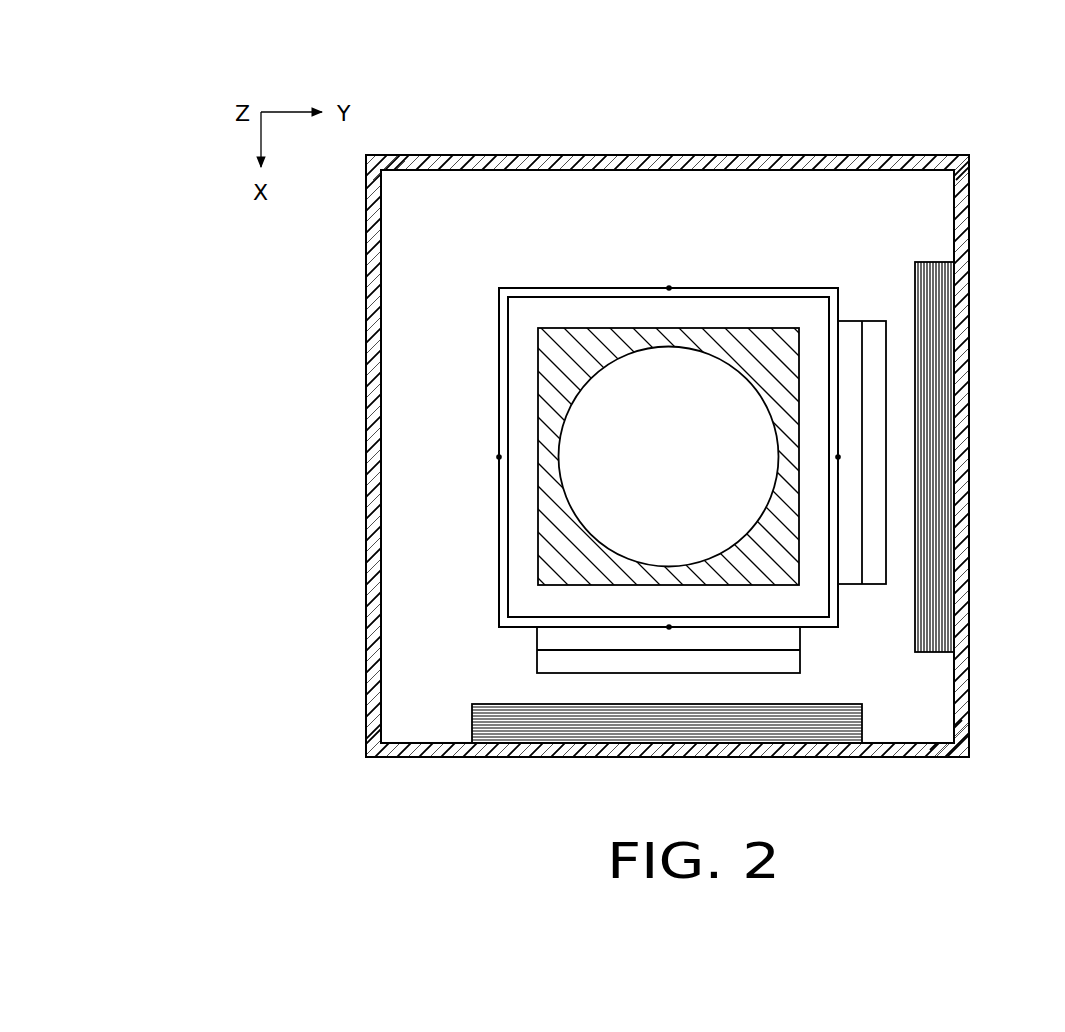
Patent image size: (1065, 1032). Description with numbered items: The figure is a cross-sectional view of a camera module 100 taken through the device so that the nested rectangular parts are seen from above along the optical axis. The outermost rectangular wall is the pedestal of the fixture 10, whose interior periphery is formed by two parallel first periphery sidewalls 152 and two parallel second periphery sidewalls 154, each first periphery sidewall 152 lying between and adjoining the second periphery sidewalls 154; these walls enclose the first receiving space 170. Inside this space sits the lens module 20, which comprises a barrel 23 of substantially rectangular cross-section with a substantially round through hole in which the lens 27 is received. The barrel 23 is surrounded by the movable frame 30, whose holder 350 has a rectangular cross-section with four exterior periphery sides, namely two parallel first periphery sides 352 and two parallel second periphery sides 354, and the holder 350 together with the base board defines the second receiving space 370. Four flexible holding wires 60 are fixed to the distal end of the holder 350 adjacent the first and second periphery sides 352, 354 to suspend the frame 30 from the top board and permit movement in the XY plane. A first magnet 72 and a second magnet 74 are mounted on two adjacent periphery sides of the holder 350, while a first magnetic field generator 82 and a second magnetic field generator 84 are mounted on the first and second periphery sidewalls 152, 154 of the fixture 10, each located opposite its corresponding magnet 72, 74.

The camera module 100 is at (886, 84).
The fixture 10 is at (962, 486).
The first periphery sidewall 152 is at (943, 712).
The second periphery sidewall 154 is at (889, 737).
The first receiving space 170 is at (908, 219).
The lens module 20 is at (521, 323).
The barrel 23 is at (558, 525).
The lens 27 is at (608, 427).
The frame 30 is at (839, 268).
The holder 350 is at (710, 291).
The first periphery side 352 is at (849, 609).
The second periphery side 354 is at (827, 640).
The second receiving space 370 is at (815, 329).
The holding wire 60 is at (501, 456).
The first magnet 72 is at (873, 380).
The second magnet 74 is at (570, 665).
The first magnetic field generator 82 is at (940, 438).
The second magnetic field generator 84 is at (680, 725).